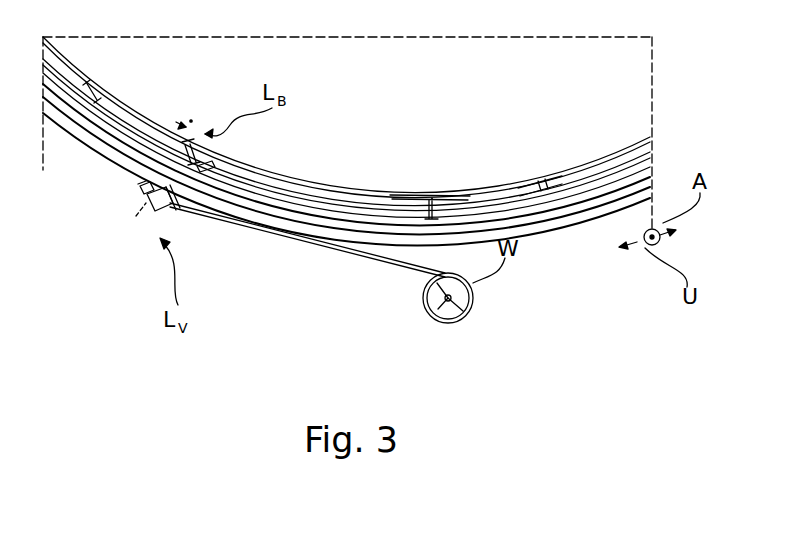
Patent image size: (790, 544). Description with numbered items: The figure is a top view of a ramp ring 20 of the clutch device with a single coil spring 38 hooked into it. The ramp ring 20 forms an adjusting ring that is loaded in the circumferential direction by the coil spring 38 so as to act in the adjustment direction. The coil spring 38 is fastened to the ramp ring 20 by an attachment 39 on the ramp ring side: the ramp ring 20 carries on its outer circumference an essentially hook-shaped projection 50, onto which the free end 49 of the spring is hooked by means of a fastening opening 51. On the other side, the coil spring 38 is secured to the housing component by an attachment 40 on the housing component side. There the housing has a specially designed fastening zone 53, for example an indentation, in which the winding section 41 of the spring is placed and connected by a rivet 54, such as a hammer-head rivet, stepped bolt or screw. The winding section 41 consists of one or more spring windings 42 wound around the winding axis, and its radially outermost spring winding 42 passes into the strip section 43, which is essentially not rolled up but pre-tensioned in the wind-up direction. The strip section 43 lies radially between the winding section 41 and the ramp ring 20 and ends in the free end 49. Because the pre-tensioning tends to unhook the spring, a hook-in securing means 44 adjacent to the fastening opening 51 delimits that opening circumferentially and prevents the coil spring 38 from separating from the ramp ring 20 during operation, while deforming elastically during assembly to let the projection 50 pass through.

The ramp ring 20 is at (555, 222).
The coil spring 38 is at (369, 308).
The attachment on ramp ring side 39 is at (153, 241).
The attachment on housing component side 40 is at (487, 343).
The winding section 41 is at (477, 287).
The spring winding 42 is at (447, 323).
The strip section 43 is at (333, 243).
The hook-in securing means 44 is at (233, 170).
The free end 49 is at (143, 188).
The projection 50 is at (170, 222).
The fastening opening 51 is at (201, 225).
The fastening zone 53 is at (437, 308).
The rivet 54 is at (467, 313).